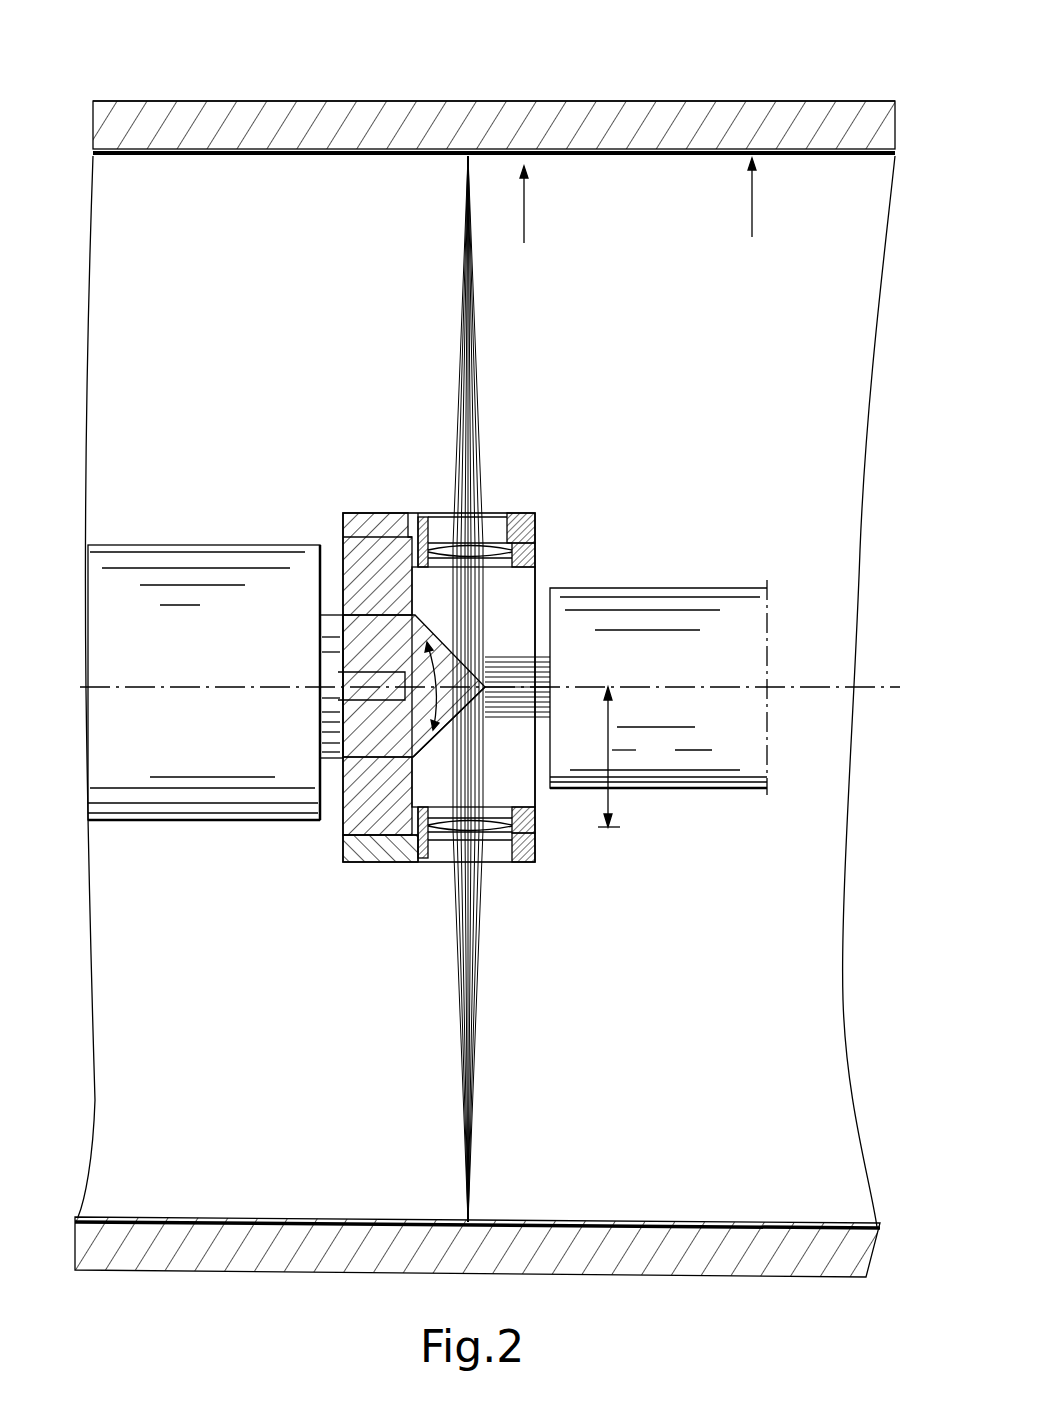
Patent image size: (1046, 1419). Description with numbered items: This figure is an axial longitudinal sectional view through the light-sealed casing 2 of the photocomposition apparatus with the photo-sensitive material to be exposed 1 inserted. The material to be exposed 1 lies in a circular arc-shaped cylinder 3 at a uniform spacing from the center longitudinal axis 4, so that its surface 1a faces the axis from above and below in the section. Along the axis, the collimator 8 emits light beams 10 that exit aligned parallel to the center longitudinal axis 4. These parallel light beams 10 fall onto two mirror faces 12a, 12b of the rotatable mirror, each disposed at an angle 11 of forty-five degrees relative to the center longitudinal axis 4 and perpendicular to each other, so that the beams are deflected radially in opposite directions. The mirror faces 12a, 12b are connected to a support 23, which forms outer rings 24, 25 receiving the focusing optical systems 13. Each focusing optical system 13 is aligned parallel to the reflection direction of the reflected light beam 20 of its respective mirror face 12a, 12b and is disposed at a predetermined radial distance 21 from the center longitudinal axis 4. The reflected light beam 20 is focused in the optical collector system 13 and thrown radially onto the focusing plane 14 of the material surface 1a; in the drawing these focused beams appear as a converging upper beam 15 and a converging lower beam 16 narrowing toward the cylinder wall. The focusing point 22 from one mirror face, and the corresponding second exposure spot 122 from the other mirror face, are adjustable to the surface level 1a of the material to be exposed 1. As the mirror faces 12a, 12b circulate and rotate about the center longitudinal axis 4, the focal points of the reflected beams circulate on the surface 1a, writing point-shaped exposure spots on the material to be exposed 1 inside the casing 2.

The photo-sensitive material to be exposed 1 is at (227, 150).
The surface of the material to be exposed 1a is at (333, 156).
The casing 2 is at (690, 118).
The circular arc-shaped cylinder 3 is at (752, 222).
The center longitudinal axis 4 is at (872, 686).
The collimator 8 is at (733, 762).
The light beams 10 is at (552, 658).
The angle 11 is at (427, 655).
The mirror face 12a is at (412, 592).
The mirror face 12b is at (433, 742).
The focusing optical system 13 is at (490, 549).
The focusing plane 14 is at (549, 1218).
The upper light beam 15 is at (471, 366).
The lower light beam 16 is at (470, 1037).
The reflected light beam 20 is at (470, 598).
The radial distance 21 is at (655, 757).
The focusing point 22 is at (470, 1221).
The support 23 is at (357, 813).
The outer ring 24 is at (535, 517).
The outer ring 25 is at (535, 552).
The second exposure spot 122 is at (463, 157).